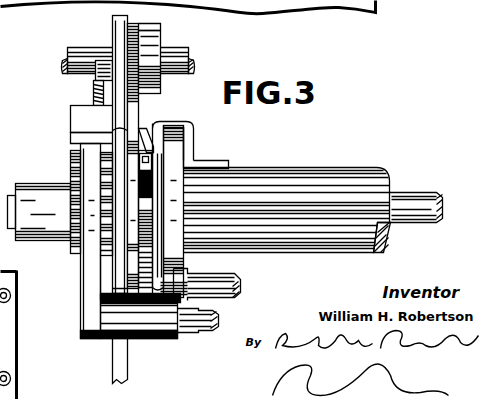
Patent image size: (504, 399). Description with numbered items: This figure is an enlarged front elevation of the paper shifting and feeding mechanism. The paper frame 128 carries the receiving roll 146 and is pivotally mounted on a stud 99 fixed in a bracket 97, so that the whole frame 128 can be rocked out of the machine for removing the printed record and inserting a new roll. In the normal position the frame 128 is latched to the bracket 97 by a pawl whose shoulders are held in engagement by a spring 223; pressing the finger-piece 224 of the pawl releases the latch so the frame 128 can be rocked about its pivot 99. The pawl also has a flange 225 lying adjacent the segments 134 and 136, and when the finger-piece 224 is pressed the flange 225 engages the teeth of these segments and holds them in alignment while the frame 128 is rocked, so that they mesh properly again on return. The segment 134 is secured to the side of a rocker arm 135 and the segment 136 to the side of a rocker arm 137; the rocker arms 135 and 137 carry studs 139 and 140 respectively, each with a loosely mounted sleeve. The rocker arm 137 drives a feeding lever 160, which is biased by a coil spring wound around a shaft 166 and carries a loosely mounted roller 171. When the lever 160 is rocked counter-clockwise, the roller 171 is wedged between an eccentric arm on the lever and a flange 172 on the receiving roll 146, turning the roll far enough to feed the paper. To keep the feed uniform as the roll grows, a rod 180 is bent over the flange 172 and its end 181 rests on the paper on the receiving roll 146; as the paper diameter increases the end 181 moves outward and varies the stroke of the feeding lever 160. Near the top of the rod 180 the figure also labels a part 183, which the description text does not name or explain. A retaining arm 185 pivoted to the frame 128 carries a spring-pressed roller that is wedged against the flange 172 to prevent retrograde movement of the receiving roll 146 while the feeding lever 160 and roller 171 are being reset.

The bracket 97 is at (119, 365).
The stud 99 is at (190, 63).
The frame 128 is at (133, 113).
The segment 134 is at (72, 170).
The rocker arm 135 is at (86, 298).
The segment 136 is at (104, 233).
The rocker arm 137 is at (115, 263).
The stud 139 is at (212, 331).
The stud 140 is at (225, 300).
The receiving roll 146 is at (344, 170).
The feeding lever 160 is at (160, 257).
The shaft 166 is at (402, 194).
The roller 171 is at (160, 254).
The flange 172 is at (180, 226).
The rod 180 is at (193, 131).
The end of rod 181 is at (219, 166).
The bracket 183 is at (184, 117).
The retaining arm 185 is at (144, 97).
The spring 223 is at (92, 93).
The finger-piece 224 is at (138, 27).
The flange 225 is at (81, 123).